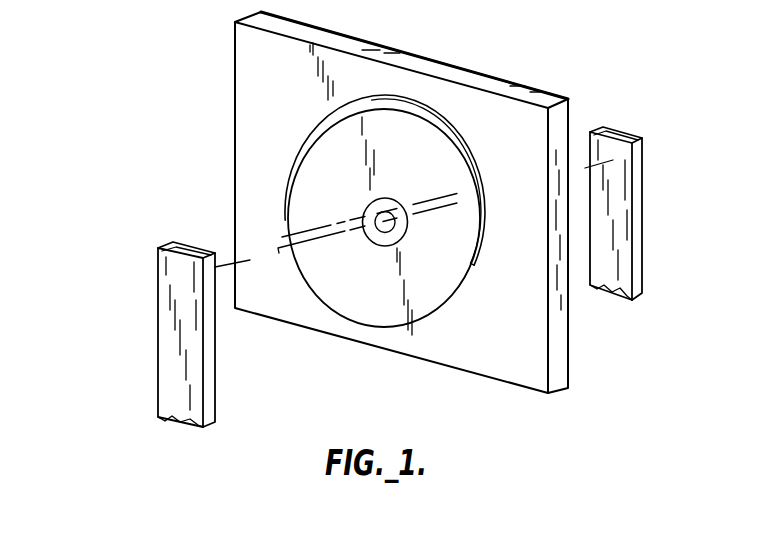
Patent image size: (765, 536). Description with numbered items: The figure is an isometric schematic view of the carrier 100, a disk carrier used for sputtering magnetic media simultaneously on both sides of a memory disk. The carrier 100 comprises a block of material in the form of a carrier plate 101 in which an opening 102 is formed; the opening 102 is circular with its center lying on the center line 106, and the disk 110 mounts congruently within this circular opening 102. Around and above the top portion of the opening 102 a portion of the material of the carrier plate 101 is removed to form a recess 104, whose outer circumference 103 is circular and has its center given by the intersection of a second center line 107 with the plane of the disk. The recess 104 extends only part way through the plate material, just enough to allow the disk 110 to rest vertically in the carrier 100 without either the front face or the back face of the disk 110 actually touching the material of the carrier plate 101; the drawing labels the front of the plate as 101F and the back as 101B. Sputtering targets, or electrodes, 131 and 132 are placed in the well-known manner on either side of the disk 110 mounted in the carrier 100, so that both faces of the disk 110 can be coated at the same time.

The carrier 100 is at (163, 60).
The carrier plate 101 is at (253, 43).
The front face of panel 101F is at (517, 357).
The back face of panel 101B is at (571, 332).
The opening 102 is at (327, 298).
The outer circumference 103 is at (312, 140).
The recess 104 is at (307, 157).
The center line 106 is at (265, 242).
The center line 107 is at (277, 237).
The disk 110 is at (414, 147).
The sputtering target 131 is at (175, 293).
The sputtering target 132 is at (640, 193).